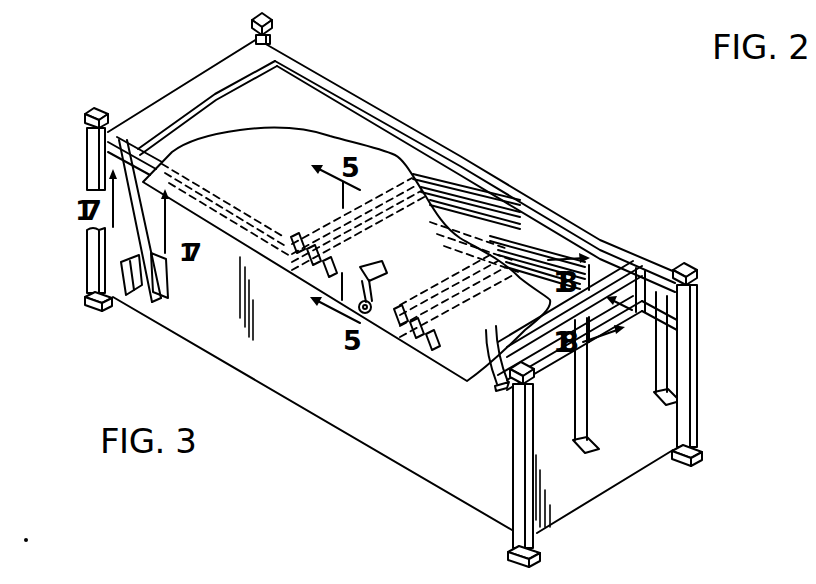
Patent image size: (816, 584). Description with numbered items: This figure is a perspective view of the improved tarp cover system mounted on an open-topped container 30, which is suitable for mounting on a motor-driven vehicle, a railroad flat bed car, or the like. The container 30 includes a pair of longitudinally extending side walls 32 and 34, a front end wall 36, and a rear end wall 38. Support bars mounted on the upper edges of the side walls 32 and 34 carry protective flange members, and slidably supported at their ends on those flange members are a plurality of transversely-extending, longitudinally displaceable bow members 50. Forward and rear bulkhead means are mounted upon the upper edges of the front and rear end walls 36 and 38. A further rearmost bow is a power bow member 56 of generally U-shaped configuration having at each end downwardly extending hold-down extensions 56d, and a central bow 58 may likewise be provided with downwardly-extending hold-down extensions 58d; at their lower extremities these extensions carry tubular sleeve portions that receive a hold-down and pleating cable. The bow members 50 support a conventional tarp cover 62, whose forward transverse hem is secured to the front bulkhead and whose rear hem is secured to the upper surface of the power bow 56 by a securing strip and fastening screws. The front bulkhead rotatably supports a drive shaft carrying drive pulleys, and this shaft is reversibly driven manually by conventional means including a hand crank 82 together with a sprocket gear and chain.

The open-topped container 30 is at (392, 210).
The side wall 32 is at (313, 380).
The side wall 34 is at (385, 115).
The front end wall 36 is at (180, 87).
The rear end wall 38 is at (670, 421).
The bow members 50 is at (467, 171).
The power bow member 56 is at (639, 268).
The hold-down extensions 56d is at (487, 390).
The central bow 58 is at (518, 196).
The hold-down extensions 58d is at (368, 315).
The tarp cover 62 is at (258, 179).
The hand crank 82 is at (123, 260).